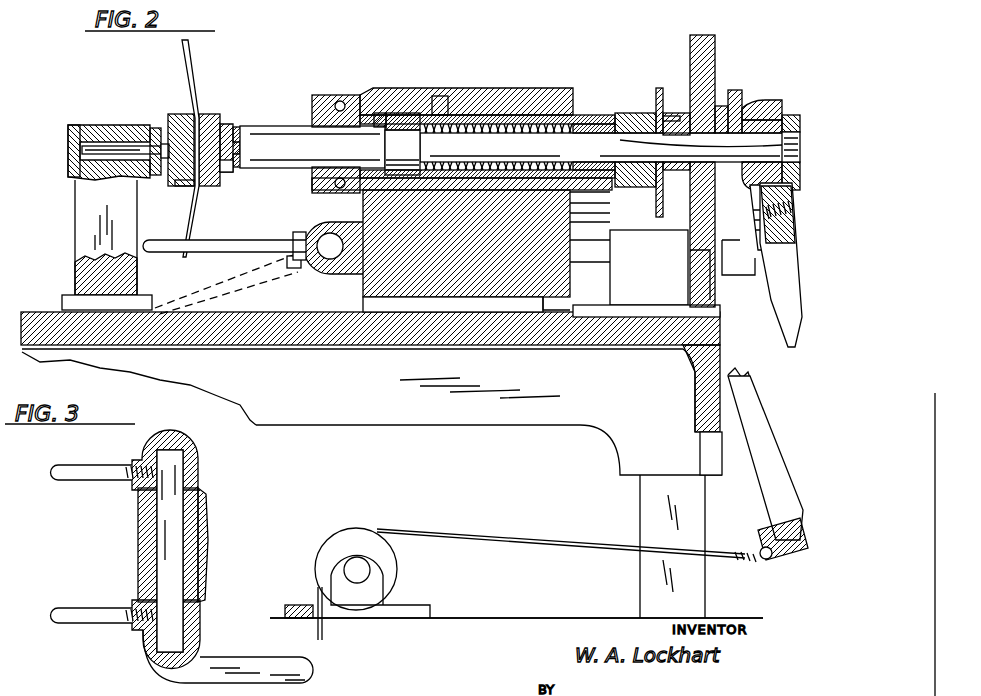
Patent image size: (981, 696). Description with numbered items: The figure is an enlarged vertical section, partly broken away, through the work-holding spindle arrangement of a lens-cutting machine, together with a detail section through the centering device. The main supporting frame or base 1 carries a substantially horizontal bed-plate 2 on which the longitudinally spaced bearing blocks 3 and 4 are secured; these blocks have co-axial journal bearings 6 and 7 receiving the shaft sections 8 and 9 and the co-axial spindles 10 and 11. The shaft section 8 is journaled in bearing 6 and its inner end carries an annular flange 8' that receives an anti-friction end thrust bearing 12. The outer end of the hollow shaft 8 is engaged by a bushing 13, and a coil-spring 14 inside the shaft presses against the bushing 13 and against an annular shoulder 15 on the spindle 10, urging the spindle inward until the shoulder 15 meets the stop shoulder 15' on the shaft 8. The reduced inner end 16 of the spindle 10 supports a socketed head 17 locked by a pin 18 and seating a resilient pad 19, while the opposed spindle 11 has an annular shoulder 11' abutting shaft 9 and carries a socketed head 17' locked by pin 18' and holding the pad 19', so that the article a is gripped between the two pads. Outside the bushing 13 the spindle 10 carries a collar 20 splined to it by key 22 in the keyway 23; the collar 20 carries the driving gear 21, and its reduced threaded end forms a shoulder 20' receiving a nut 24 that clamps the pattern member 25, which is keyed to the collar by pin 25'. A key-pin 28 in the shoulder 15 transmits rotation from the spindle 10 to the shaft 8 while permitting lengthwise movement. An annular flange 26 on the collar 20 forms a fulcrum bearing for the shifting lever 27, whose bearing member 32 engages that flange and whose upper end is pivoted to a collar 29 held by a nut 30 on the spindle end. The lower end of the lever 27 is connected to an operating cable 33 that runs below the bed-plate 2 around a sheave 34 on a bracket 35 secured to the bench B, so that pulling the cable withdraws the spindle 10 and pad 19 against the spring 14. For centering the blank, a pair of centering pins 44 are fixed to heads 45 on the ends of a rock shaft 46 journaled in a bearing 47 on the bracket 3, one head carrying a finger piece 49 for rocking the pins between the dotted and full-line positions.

In FIG. 2, the main supporting frame or base 1 is at (622, 473).
In FIG. 2, the bed-plate 2 is at (320, 336).
In FIG. 2, the bearing block 3 is at (348, 246).
In FIG. 3, the bearing block 3 is at (208, 546).
In FIG. 2, the bearing block 4 is at (80, 226).
In FIG. 2, the journal bearing 6 is at (440, 108).
In FIG. 2, the journal bearing 7 is at (118, 132).
In FIG. 2, the shaft section 8 is at (462, 126).
In FIG. 2, the annular flange 8' is at (328, 132).
In FIG. 2, the shaft section 9 is at (98, 138).
In FIG. 2, the spindle 10 is at (516, 147).
In FIG. 2, the spindle 11 is at (122, 126).
In FIG. 2, the annular shoulder 11' is at (156, 172).
In FIG. 2, the anti-friction end thrust bearing 12 is at (341, 100).
In FIG. 2, the bushing 13 is at (592, 116).
In FIG. 2, the coil-spring 14 is at (472, 120).
In FIG. 2, the annular shoulder 15 is at (402, 152).
In FIG. 2, the stop shoulder 15' is at (387, 95).
In FIG. 2, the reduced inner end 16 is at (226, 172).
In FIG. 2, the socketed head 17 is at (234, 133).
In FIG. 2, the socketed head 17' is at (177, 197).
In FIG. 2, the key or pin 18 is at (253, 133).
In FIG. 2, the key or pin 18' is at (162, 135).
In FIG. 2, the resilient pad 19 is at (209, 164).
In FIG. 2, the resilient pad 19' is at (197, 135).
In FIG. 2, the collar 20 is at (762, 108).
In FIG. 2, the shoulder 20' is at (671, 191).
In FIG. 2, the gear 21 is at (716, 56).
In FIG. 2, the pin or key 22 is at (722, 106).
In FIG. 2, the keyway 23 is at (768, 124).
In FIG. 2, the nut 24 is at (627, 114).
In FIG. 2, the pattern member 25 is at (649, 97).
In FIG. 2, the key or pin 25' is at (675, 95).
In FIG. 2, the annular flange 26 is at (742, 93).
In FIG. 2, the shifting lever 27 is at (785, 316).
In FIG. 2, the key-pin 28 is at (414, 116).
In FIG. 2, the collar 29 is at (750, 208).
In FIG. 2, the nut 30 is at (797, 115).
In FIG. 2, the bearing member 32 is at (738, 257).
In FIG. 2, the operating cord or cable 33 is at (506, 538).
In FIG. 2, the sheave 34 is at (349, 530).
In FIG. 2, the bracket 35 is at (365, 600).
In FIG. 2, the centering pins 44 is at (246, 240).
In FIG. 3, the centering pins 44 is at (75, 480).
In FIG. 2, the heads 45 is at (300, 233).
In FIG. 3, the heads 45 is at (198, 464).
In FIG. 2, the rock shaft 46 is at (332, 262).
In FIG. 3, the rock shaft 46 is at (165, 556).
In FIG. 2, the bearing 47 is at (293, 268).
In FIG. 3, the bearing 47 is at (138, 525).
In FIG. 3, the finger piece 49 is at (310, 685).
In FIG. 2, the article or blank a is at (190, 58).
In FIG. 2, the bench B is at (516, 631).